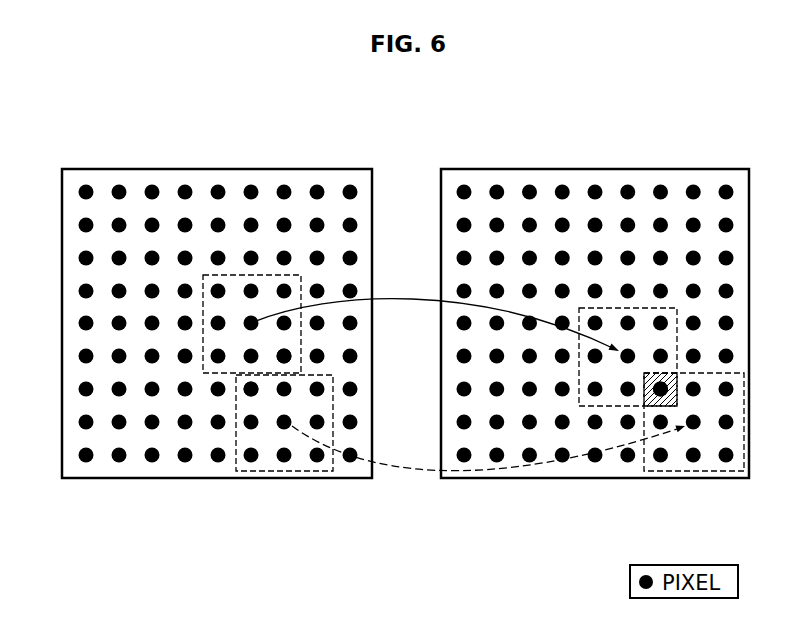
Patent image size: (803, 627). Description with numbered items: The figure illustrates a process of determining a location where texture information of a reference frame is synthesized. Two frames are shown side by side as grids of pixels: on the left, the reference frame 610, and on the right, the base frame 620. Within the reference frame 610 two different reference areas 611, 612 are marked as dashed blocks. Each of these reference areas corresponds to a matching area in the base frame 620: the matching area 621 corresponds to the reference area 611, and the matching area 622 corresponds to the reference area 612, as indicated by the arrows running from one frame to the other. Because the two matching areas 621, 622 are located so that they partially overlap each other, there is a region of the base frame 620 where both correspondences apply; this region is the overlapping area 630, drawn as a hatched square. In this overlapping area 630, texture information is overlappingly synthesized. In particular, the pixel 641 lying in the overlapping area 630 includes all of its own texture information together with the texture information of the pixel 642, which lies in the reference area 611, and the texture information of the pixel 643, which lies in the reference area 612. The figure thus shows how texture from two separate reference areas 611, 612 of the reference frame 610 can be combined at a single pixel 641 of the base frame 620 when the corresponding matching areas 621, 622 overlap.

The reference frame 610 is at (217, 169).
The base frame 620 is at (594, 169).
The reference area 611 is at (203, 340).
The reference area 612 is at (286, 471).
The matching area 621 is at (645, 308).
The matching area 622 is at (697, 471).
The overlapping area 630 is at (663, 373).
The pixel 641 is at (672, 383).
The pixel 642 is at (290, 352).
The pixel 643 is at (245, 393).